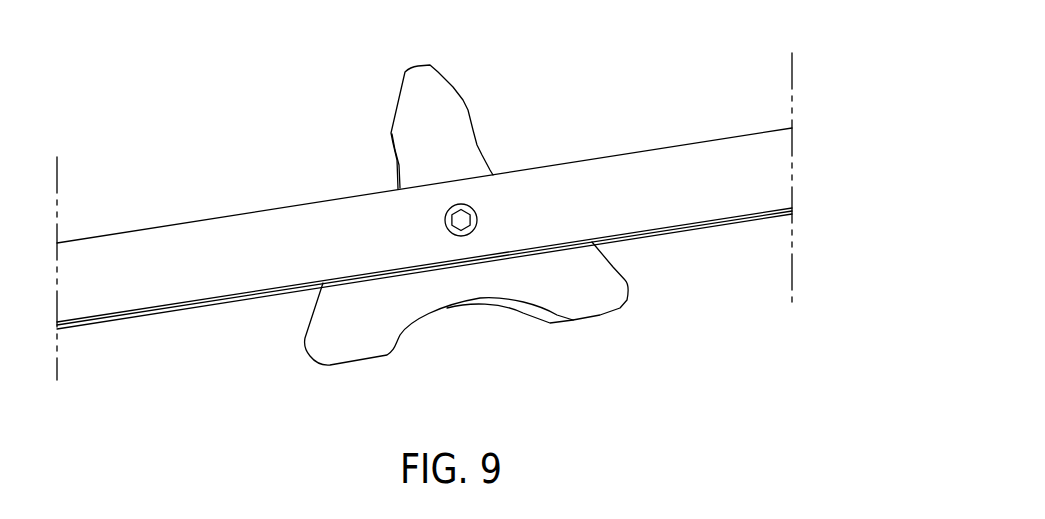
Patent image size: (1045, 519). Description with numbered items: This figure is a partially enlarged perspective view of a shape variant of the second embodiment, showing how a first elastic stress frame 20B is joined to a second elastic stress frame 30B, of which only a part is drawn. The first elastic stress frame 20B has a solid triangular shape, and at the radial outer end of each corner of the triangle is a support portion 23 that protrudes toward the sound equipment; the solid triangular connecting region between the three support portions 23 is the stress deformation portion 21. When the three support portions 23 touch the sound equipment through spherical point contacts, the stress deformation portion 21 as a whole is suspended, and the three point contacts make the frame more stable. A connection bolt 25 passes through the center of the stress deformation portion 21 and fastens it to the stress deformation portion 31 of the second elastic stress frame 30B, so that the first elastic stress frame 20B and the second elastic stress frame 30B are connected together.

The first elastic stress frame 20B is at (335, 67).
The stress deformation portion 21 is at (445, 123).
The support portion 23 is at (430, 65).
The connection bolt 25 is at (460, 219).
The second elastic stress frame 30B is at (820, 77).
The stress deformation portion 31 is at (700, 190).